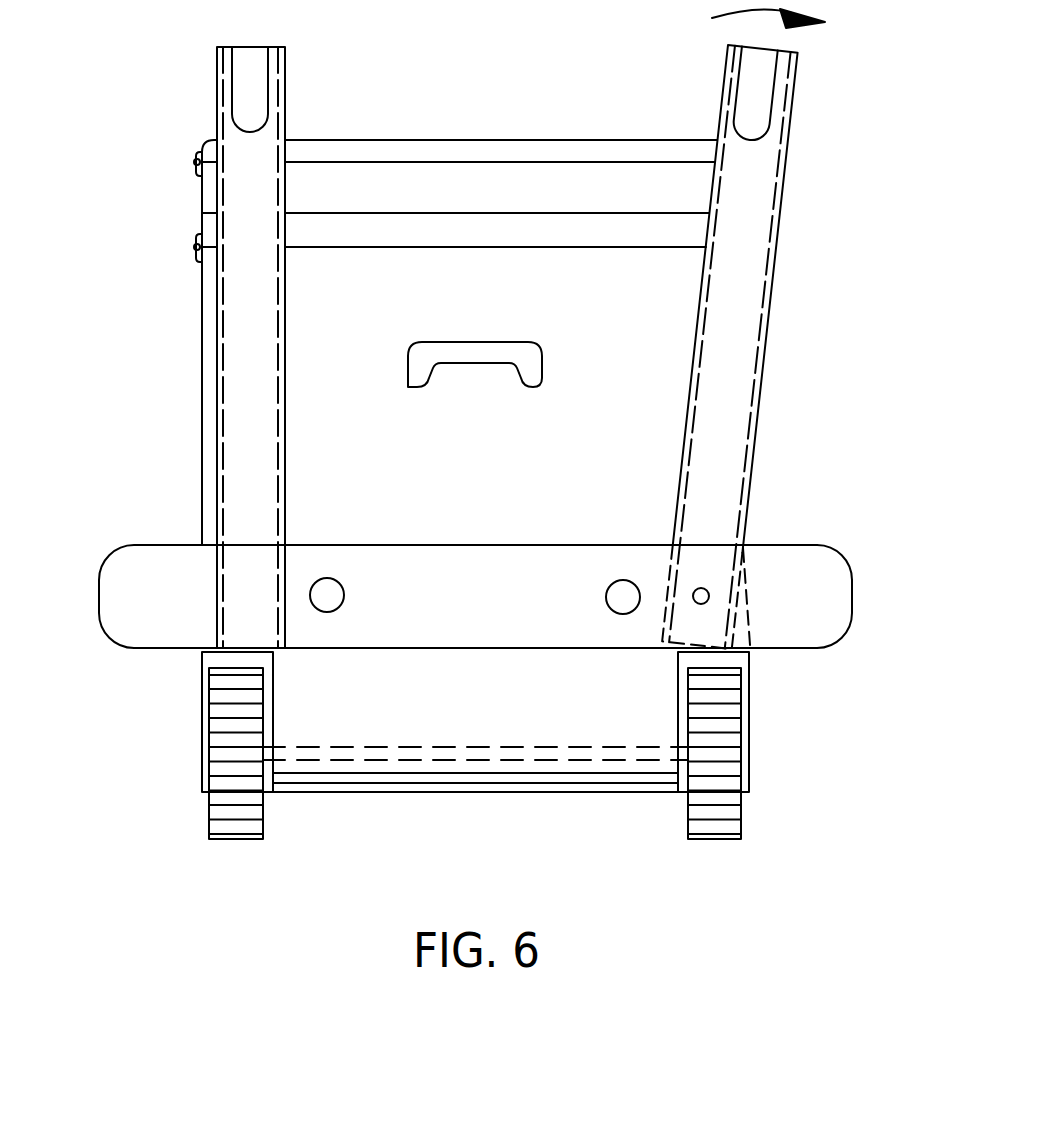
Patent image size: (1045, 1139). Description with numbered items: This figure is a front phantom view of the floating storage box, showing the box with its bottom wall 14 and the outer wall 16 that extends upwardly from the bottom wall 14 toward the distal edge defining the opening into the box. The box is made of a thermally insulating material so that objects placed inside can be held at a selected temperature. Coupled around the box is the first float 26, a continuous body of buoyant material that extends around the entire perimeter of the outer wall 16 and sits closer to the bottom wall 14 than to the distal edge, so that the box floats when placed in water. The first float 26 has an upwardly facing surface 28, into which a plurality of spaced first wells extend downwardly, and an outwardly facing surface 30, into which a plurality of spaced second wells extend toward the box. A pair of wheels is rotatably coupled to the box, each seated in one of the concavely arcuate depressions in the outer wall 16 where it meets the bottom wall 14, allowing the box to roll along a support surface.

The bottom wall 14 is at (466, 793).
The outer wall 16 is at (455, 290).
The first float 26 is at (135, 545).
The upwardly facing surface 28 is at (817, 543).
The outwardly facing surface 30 is at (852, 595).